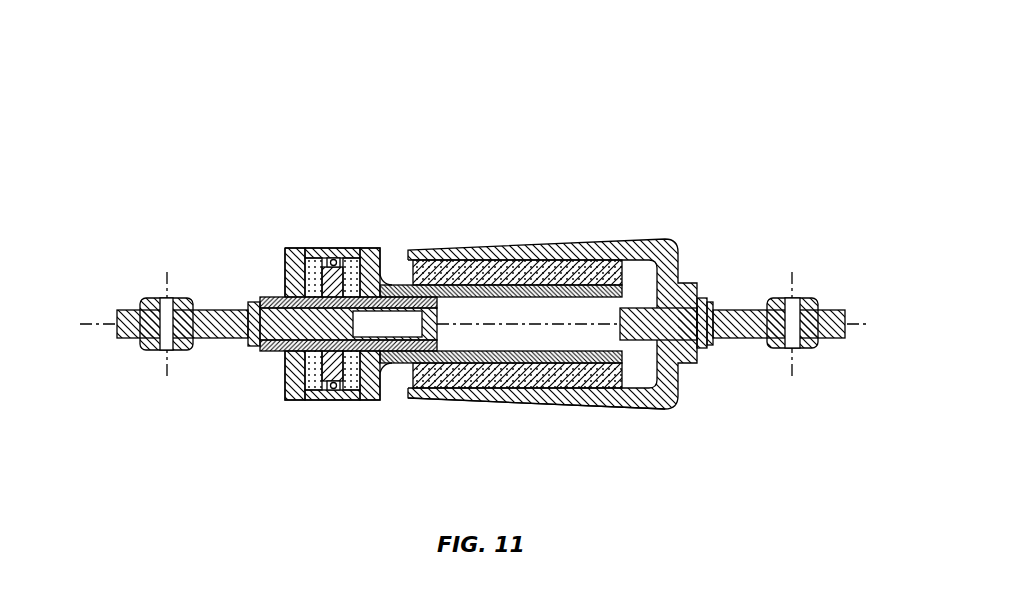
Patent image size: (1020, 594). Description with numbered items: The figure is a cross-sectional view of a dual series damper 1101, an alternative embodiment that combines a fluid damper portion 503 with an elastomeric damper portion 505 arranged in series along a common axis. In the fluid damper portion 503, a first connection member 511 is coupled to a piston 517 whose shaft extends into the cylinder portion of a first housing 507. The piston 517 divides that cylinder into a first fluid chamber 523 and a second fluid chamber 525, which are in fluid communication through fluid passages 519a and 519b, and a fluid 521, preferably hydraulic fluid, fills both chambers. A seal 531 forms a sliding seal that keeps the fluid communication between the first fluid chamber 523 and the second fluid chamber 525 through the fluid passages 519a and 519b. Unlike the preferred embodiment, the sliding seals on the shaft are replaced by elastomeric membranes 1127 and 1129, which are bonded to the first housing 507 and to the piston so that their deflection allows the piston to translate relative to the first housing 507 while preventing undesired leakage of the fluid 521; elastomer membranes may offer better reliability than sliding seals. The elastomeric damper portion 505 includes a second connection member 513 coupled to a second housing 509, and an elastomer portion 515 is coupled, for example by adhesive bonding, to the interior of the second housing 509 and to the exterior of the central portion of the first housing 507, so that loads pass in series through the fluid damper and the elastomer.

The dual series damper 1101 is at (291, 68).
The fluid damper portion 503 is at (220, 180).
The elastomeric damper portion 505 is at (670, 200).
The first housing 507 is at (376, 254).
The second housing 509 is at (622, 407).
The first connection member 511 is at (119, 310).
The second connection member 513 is at (735, 310).
The elastomer portion 515 is at (598, 262).
The piston 517 is at (350, 400).
The fluid passage 519a is at (312, 398).
The fluid passage 519b is at (311, 262).
The fluid 521 is at (350, 250).
The first fluid chamber 523 is at (287, 380).
The second fluid chamber 525 is at (360, 393).
The seal 531 is at (323, 258).
The elastomeric membrane 1127 is at (287, 298).
The elastomeric membrane 1129 is at (392, 285).